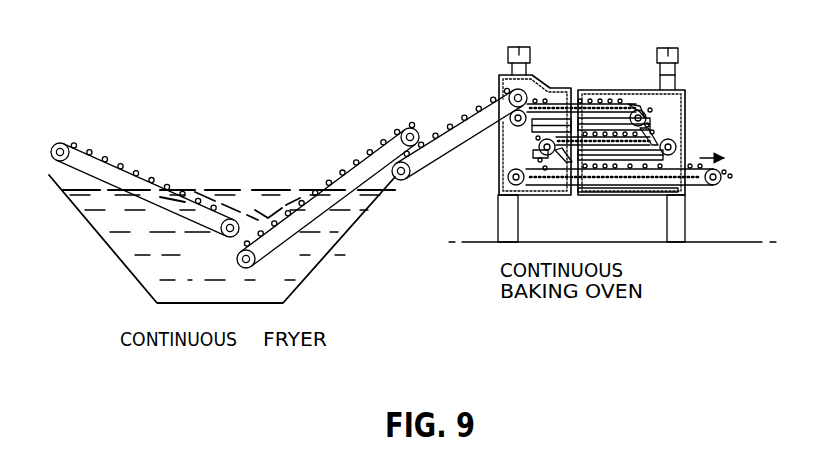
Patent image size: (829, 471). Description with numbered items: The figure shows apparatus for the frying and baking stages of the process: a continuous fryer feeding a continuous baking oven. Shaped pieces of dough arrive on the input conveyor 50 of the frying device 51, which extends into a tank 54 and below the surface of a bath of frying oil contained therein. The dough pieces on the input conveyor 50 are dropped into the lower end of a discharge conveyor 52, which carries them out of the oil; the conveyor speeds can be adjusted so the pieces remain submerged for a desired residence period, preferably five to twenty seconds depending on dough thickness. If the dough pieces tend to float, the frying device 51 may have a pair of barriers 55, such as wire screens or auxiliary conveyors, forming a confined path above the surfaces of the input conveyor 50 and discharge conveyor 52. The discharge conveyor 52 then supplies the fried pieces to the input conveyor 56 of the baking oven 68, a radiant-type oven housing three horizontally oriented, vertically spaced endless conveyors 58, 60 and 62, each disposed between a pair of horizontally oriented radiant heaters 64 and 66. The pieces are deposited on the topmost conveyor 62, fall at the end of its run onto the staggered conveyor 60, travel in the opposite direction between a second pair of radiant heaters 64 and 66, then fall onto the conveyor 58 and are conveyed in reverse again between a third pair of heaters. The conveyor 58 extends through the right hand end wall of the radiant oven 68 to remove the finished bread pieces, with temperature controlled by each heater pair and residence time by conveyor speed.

The input conveyor 50 is at (87, 148).
The frying device 51 is at (211, 140).
The discharge conveyor 52 is at (352, 162).
The tank 54 is at (318, 273).
The barriers 55 is at (285, 200).
The input conveyor of baking oven 56 is at (431, 167).
The conveyor 58 is at (598, 192).
The conveyor 60 is at (540, 143).
The conveyor 62 is at (647, 117).
The radiant heater 64 is at (622, 102).
The radiant heater 66 is at (597, 118).
The baking oven 68 is at (701, 105).